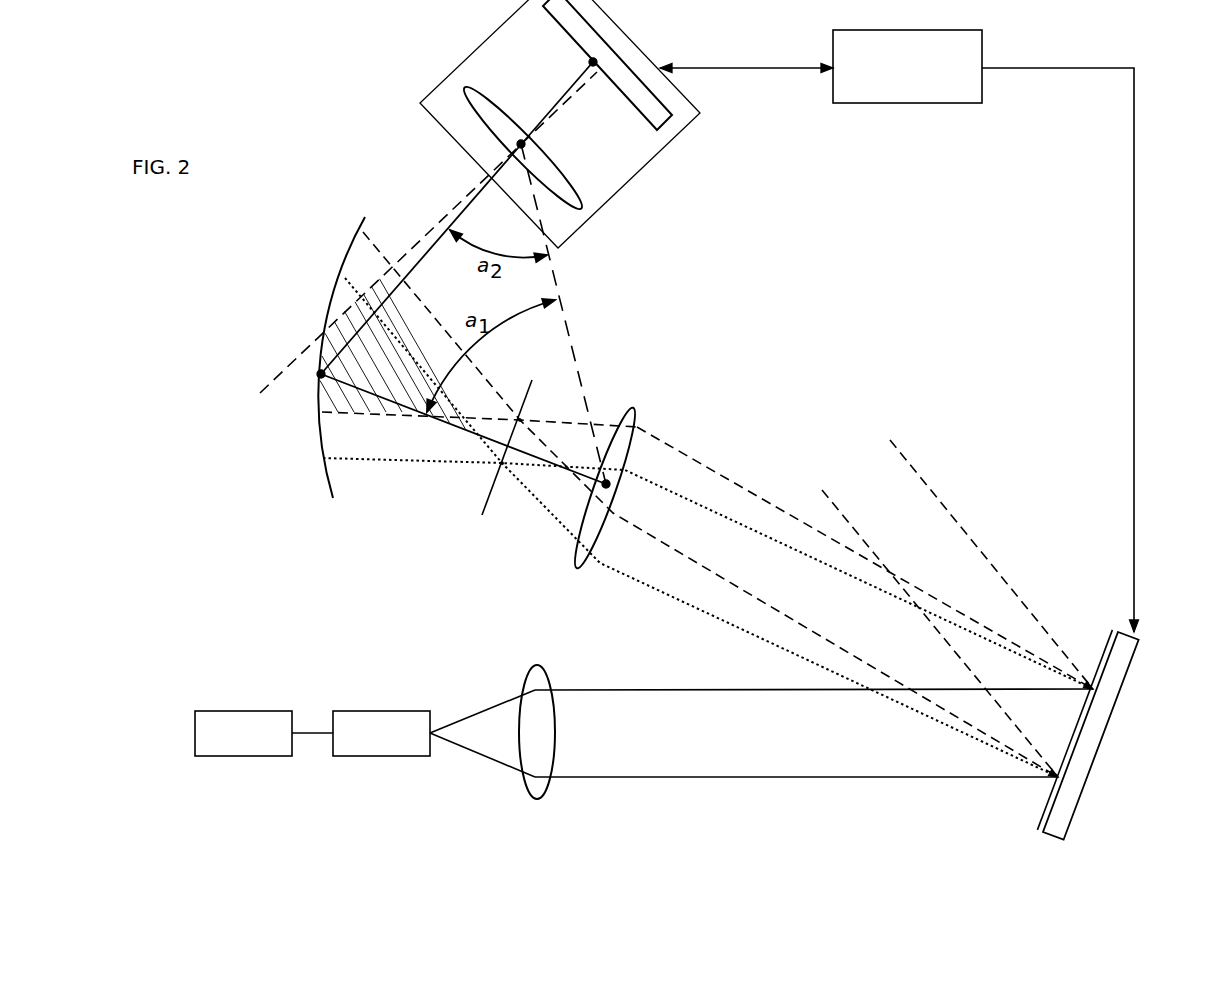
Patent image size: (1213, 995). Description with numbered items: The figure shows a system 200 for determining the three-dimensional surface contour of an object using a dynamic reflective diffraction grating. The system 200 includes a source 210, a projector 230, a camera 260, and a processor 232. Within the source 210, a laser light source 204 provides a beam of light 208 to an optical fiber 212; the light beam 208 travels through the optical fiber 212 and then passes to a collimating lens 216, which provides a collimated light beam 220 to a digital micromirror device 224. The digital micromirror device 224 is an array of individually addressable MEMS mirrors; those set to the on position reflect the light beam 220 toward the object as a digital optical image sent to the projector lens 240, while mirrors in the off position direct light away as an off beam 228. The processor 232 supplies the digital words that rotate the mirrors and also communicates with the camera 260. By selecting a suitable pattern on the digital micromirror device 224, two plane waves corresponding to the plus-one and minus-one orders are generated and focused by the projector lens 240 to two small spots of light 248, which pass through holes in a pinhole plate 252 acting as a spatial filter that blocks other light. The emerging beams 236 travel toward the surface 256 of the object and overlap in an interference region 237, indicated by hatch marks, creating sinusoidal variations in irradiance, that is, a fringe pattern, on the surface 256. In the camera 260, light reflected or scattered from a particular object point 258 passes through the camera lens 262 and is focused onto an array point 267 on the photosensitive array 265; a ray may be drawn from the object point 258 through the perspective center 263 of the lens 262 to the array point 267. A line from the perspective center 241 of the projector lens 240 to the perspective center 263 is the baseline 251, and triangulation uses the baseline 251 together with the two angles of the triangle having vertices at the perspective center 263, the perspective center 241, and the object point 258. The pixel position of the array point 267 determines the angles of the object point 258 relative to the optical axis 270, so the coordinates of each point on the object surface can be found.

The system 200 is at (299, 118).
The laser light source 204 is at (212, 710).
The beam of light 208 is at (488, 708).
The source 210 is at (318, 590).
The optical fiber 212 is at (357, 710).
The collimating lens 216 is at (547, 792).
The collimated light beam 220 is at (770, 748).
The digital micromirror device 224 is at (1098, 752).
The off beam 228 is at (985, 552).
The projector 230 is at (900, 360).
The processor 232 is at (943, 103).
The diffracted beams 236 is at (738, 483).
The interference region 237 is at (376, 414).
The projector lens 240 is at (638, 414).
The perspective center of the projector lens 241 is at (608, 487).
The spots of light 248 is at (517, 417).
The baseline 251 is at (573, 358).
The pinhole plate 252 is at (490, 500).
The surface of the object 256 is at (340, 291).
The object point 258 is at (316, 376).
The camera 260 is at (662, 192).
The camera lens 262 is at (583, 209).
The perspective center of the camera lens 263 is at (525, 146).
The photosensitive array 265 is at (670, 123).
The array point 267 is at (591, 64).
The optical axis 270 is at (443, 220).